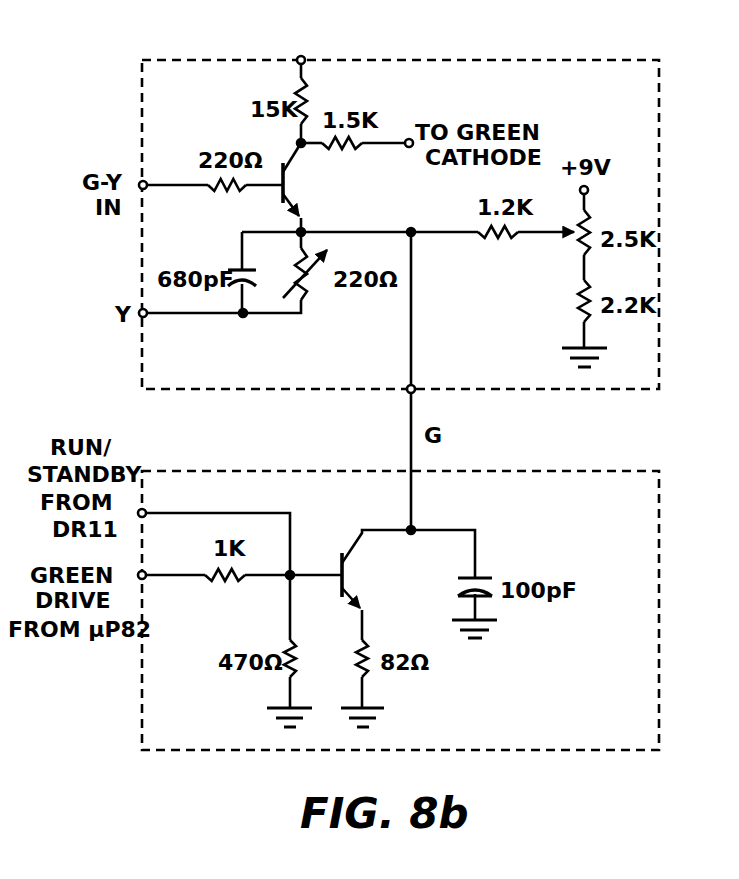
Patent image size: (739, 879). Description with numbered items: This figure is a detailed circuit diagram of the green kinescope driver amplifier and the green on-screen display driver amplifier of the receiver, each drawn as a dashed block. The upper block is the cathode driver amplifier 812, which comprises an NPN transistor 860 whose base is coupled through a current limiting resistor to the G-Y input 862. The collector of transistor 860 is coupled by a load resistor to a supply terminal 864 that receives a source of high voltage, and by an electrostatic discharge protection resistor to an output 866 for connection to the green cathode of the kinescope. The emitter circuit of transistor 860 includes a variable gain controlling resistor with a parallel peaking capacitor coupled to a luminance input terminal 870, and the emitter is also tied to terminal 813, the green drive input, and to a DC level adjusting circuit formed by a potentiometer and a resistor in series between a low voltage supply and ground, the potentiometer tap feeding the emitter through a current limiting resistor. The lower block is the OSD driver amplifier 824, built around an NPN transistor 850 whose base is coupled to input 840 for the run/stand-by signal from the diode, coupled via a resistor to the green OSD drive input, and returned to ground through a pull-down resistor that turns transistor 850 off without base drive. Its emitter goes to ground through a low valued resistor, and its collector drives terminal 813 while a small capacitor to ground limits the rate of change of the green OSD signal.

The kinescope cathode driver amplifier 812 is at (503, 60).
The green drive input 813 is at (414, 386).
The OSD driver amplifier 824 is at (533, 470).
The input 840 is at (146, 510).
The NPN transistor 850 is at (400, 588).
The NPN transistor 860 is at (338, 199).
The G-Y input 862 is at (141, 182).
The supply terminal 864 is at (300, 57).
The output 866 is at (408, 140).
The luminance input terminal 870 is at (141, 317).